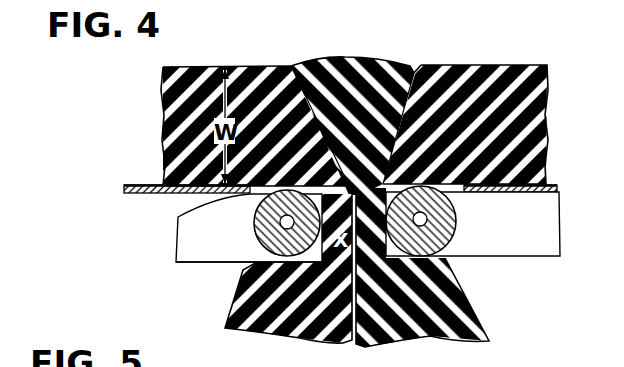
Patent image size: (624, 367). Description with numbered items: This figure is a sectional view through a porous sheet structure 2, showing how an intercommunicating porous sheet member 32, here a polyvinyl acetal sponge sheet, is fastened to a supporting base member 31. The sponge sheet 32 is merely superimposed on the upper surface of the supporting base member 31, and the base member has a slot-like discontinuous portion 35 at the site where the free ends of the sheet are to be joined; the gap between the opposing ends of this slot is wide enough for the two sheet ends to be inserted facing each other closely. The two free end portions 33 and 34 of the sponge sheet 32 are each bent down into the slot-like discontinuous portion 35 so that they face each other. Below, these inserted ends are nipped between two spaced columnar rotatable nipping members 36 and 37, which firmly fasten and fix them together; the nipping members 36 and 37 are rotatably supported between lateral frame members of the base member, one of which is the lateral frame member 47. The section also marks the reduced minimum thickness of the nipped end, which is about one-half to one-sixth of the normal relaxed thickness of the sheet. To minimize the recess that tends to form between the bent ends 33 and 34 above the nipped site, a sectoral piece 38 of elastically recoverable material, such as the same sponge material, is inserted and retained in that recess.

The porous sheet structure 2 is at (354, 102).
The supporting base member 31 is at (137, 185).
The intercommunicating porous sheet member 32 is at (267, 66).
The free end portion 33 is at (273, 338).
The free end portion 34 is at (412, 341).
The slot-like discontinuous portion 35 is at (180, 217).
The columnar rotatable nipping member 36 is at (262, 228).
The columnar rotatable nipping member 37 is at (446, 232).
The sectoral piece 38 is at (359, 63).
The lateral frame member 47 is at (205, 258).